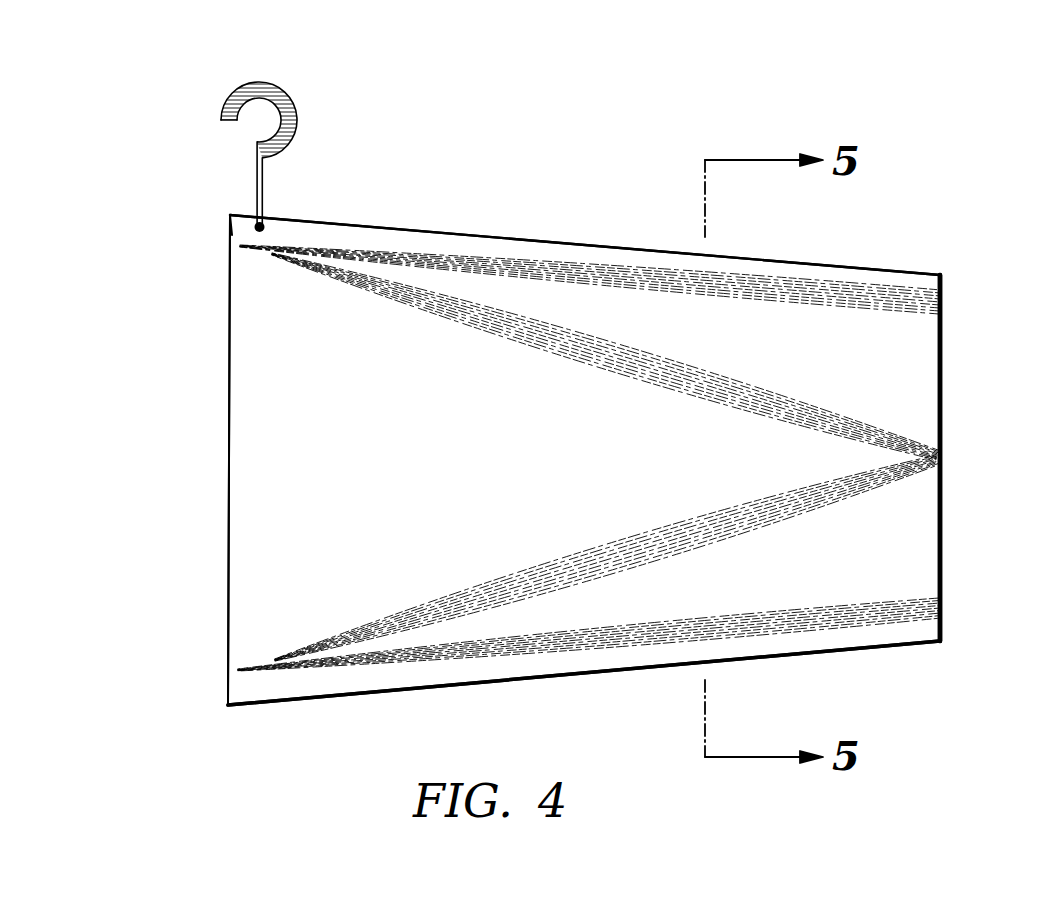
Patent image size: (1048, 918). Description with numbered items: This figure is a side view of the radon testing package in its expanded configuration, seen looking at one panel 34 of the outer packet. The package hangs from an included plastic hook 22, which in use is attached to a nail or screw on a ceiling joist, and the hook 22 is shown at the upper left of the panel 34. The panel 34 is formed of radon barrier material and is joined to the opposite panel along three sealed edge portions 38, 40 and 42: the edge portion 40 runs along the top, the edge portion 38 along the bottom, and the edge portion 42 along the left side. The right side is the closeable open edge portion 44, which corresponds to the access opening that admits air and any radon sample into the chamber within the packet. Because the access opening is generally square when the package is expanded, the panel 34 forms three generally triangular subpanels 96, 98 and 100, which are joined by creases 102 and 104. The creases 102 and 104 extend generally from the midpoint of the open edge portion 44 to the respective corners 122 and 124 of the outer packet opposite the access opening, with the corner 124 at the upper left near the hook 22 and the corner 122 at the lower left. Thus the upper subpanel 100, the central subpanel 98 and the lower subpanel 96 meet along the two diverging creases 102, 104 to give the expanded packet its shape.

The plastic hook 22 is at (297, 103).
The panel 34 is at (362, 433).
The sealed edge portion 38 is at (509, 680).
The sealed edge portion 40 is at (567, 243).
The sealed edge portion 42 is at (228, 480).
The closeable open edge portion 44 is at (942, 342).
The subpanel 96 is at (852, 575).
The subpanel 98 is at (682, 483).
The subpanel 100 is at (845, 373).
The crease 102 is at (549, 580).
The crease 104 is at (634, 364).
The corner 122 is at (228, 706).
The corner 124 is at (230, 214).